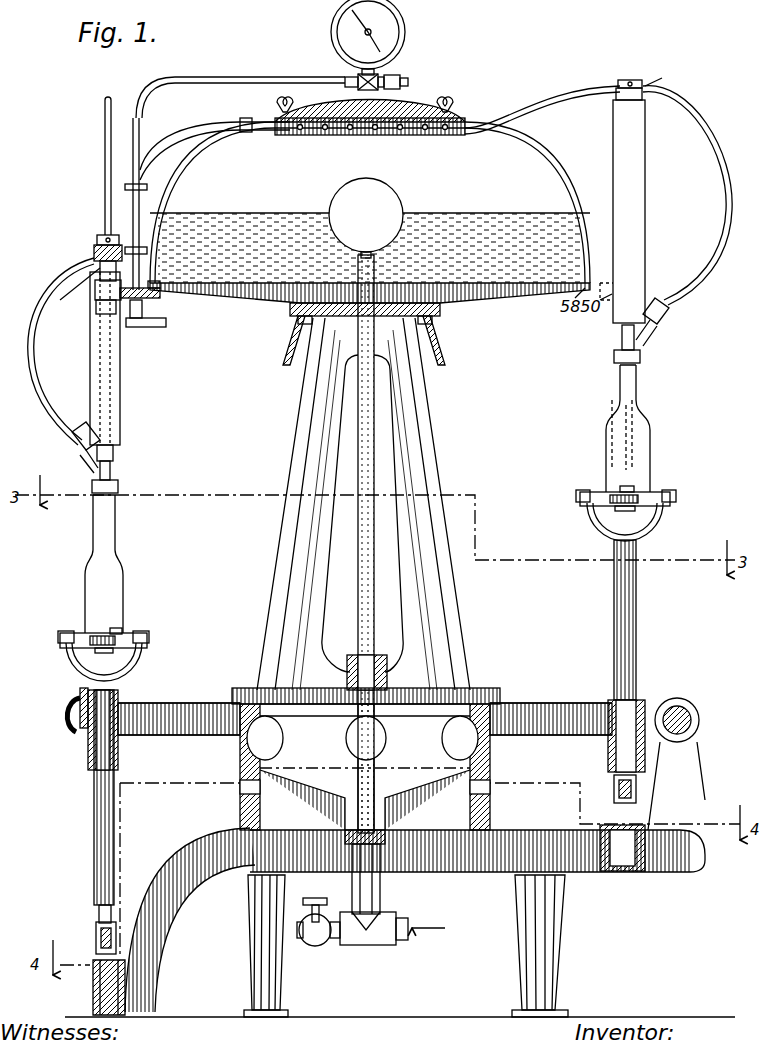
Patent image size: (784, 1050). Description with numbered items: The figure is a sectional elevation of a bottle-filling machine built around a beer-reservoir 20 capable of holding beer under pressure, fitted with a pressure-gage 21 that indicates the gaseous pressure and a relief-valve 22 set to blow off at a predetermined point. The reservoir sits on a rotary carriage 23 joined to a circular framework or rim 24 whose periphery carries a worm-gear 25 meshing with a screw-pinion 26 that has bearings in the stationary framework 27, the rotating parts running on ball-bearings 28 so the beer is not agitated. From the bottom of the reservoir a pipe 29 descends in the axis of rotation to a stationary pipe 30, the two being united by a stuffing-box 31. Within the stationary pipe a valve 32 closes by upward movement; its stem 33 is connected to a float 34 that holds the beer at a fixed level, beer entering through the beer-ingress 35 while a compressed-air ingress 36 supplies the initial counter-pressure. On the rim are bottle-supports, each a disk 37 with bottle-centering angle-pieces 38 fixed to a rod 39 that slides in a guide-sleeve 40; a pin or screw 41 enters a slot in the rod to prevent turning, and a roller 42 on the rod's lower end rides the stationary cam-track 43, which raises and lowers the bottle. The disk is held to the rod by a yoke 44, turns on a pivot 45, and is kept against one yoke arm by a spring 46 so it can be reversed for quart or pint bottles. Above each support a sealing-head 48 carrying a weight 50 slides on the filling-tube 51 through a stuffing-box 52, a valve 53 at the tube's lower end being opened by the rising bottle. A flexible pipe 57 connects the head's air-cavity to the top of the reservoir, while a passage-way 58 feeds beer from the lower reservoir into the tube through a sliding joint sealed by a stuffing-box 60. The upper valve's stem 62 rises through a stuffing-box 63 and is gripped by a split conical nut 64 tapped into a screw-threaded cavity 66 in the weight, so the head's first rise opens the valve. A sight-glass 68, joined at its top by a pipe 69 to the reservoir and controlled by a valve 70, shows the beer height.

The beer-reservoir 20 is at (370, 200).
The pressure-gage 21 is at (405, 40).
The relief-valve 22 is at (398, 74).
The rotary carriage 23 is at (433, 462).
The circular framework or rim 24 is at (165, 703).
The worm-gear 25 is at (68, 714).
The screw-pinion 26 is at (699, 712).
The stationary framework 27 is at (705, 800).
The ball-bearings 28 is at (240, 786).
The pipe 29 is at (400, 600).
The stationary pipe 30 is at (386, 742).
The stuffing-box 31 is at (388, 680).
The valve 32 is at (385, 838).
The valve stem 33 is at (390, 574).
The float 34 is at (366, 218).
The beer-ingress 35 is at (400, 918).
The compressed-air ingress 36 is at (300, 940).
The disk 37 is at (130, 635).
The bottle-centering angle-pieces 38 is at (120, 632).
The rod 39 is at (93, 812).
The guide-sleeve 40 is at (118, 745).
The pin or screw 41 is at (85, 690).
The roller 42 is at (96, 938).
The cam-track 43 is at (140, 905).
The yoke 44 is at (142, 655).
The pivot 45 is at (357, 585).
The spring 46 is at (70, 632).
The sealing-head 48 is at (118, 485).
The weight 50 is at (120, 400).
The filling-tube 51 is at (108, 420).
The stuffing-box 52 is at (113, 452).
The valve 53 is at (640, 478).
The flexible pipe 57 is at (33, 368).
The passage-way 58 is at (155, 300).
The stuffing-box 60 is at (96, 306).
The valve stem 62 is at (104, 158).
The stuffing-box 63 is at (100, 266).
The split conical nut 64 is at (98, 236).
The screw-threaded cavity 66 is at (95, 248).
The sight-glass 68 is at (140, 200).
The pipe 69 is at (230, 76).
The valve 70 is at (150, 322).